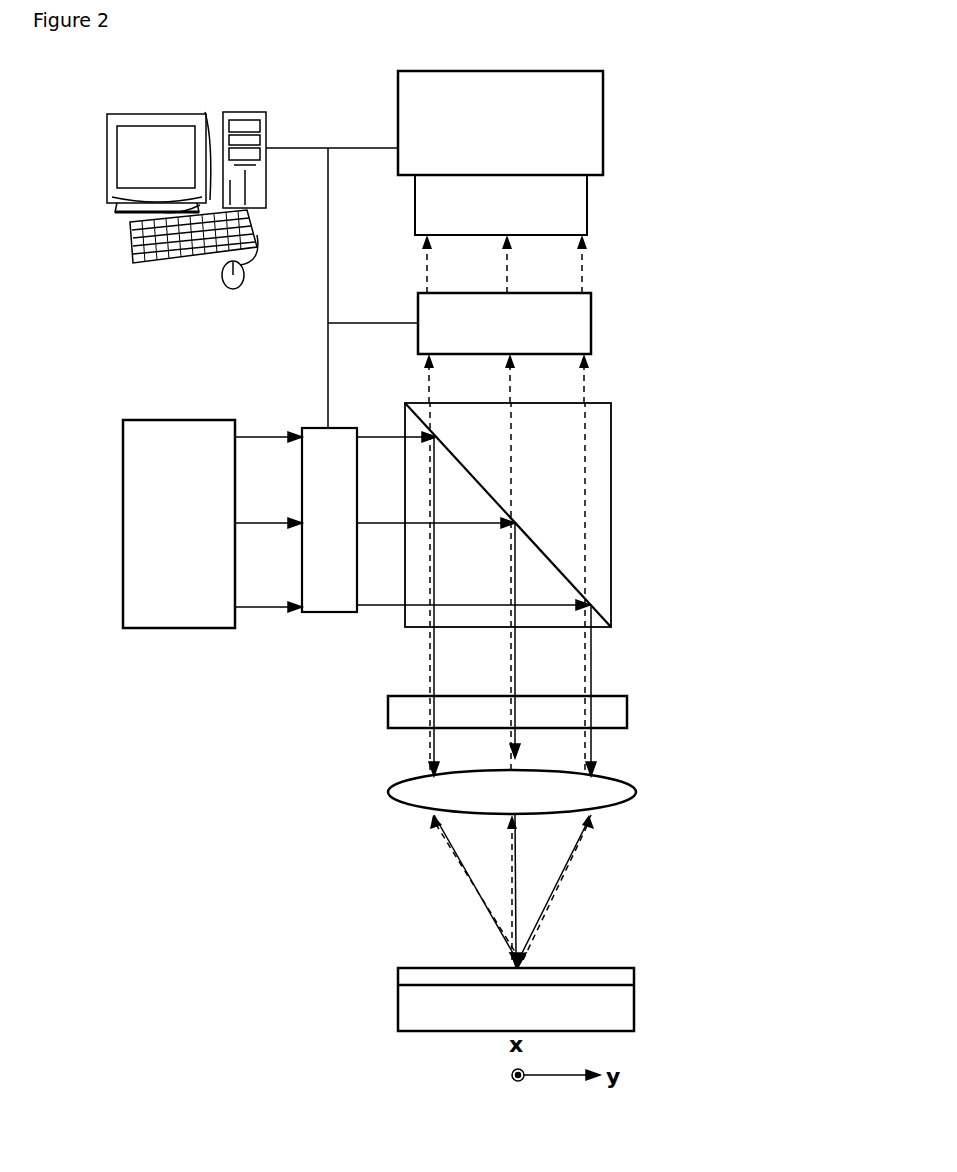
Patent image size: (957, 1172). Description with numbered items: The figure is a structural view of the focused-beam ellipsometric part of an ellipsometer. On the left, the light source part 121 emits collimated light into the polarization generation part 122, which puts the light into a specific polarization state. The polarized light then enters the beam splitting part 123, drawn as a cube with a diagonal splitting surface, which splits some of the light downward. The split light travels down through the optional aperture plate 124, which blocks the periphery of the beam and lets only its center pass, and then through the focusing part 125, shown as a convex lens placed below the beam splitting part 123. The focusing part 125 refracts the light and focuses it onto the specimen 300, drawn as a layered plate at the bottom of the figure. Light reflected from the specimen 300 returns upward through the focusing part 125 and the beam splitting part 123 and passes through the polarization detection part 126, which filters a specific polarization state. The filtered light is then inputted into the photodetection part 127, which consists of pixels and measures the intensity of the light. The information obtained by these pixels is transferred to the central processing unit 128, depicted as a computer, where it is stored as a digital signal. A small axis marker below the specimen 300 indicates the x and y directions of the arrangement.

The central processing unit 128 is at (190, 112).
The photodetection part 127 is at (603, 155).
The polarization detection part 126 is at (591, 323).
The beam splitting part 123 is at (611, 520).
The aperture plate 124 is at (627, 707).
The focusing part 125 is at (637, 790).
The specimen 300 is at (634, 977).
The light source part 121 is at (152, 628).
The polarization generation part 122 is at (330, 612).